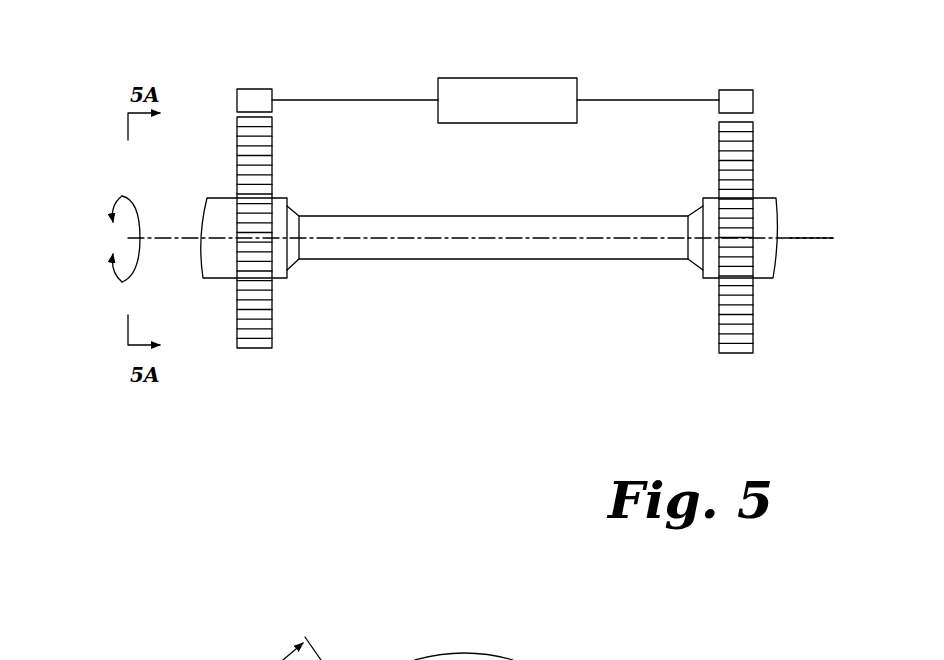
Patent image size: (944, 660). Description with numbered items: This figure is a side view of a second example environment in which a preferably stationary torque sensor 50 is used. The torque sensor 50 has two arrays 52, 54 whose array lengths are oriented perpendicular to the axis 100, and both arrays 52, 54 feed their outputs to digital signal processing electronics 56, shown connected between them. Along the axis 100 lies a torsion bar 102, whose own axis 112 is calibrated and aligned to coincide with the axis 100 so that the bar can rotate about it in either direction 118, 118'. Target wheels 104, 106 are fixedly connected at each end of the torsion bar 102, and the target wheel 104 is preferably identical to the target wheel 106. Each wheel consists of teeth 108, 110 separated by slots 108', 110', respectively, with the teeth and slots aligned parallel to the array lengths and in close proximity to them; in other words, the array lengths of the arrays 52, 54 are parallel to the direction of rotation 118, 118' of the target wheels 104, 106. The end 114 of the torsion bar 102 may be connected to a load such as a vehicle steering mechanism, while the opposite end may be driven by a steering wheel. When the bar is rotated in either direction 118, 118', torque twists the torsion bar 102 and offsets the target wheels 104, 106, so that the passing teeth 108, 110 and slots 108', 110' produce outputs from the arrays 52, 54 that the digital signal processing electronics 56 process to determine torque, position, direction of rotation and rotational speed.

The torque sensor 50 is at (385, 46).
The array 52 is at (258, 89).
The array 54 is at (736, 90).
The digital signal processing electronics 56 is at (515, 78).
The axis 100 is at (186, 232).
The torsion bar 102 is at (460, 262).
The target wheel 104 is at (256, 352).
The target wheel 106 is at (728, 353).
The teeth 108 is at (310, 347).
The slots 108' is at (305, 315).
The teeth 110 is at (663, 295).
The slots 110' is at (662, 320).
The axis of the torsion bar 112 is at (800, 238).
The end of the torsion bar 114 is at (767, 196).
The direction of rotation 118 is at (93, 199).
The direction of rotation 118' is at (74, 304).